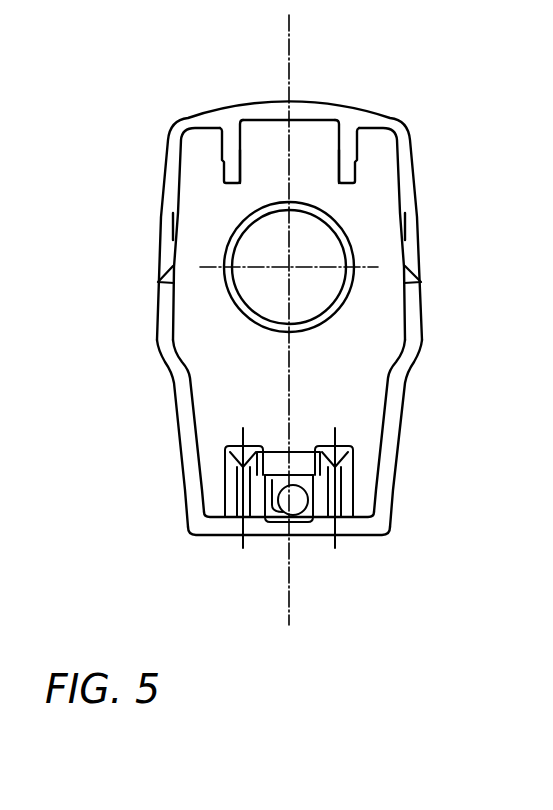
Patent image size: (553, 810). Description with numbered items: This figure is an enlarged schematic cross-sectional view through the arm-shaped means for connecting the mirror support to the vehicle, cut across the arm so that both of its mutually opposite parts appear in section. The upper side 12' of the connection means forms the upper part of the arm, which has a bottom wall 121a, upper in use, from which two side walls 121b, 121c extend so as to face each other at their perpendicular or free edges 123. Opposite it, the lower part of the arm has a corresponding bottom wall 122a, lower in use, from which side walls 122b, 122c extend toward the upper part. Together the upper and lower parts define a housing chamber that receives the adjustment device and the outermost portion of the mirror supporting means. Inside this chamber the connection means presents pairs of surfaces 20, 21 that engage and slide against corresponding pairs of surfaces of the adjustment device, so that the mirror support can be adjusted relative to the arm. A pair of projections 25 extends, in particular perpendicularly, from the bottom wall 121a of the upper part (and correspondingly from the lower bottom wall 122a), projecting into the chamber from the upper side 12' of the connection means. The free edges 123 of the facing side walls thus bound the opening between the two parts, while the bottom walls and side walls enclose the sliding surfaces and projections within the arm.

The upper side of the means for the connection to the vehicle 12' is at (278, 190).
The surface of the means for the connection to the vehicle 20 is at (338, 157).
The surface of the means for the connection to the vehicle 21 is at (250, 147).
The projection 25 is at (221, 198).
The bottom wall 121a is at (360, 110).
The side wall 121b is at (161, 214).
The side wall 121c is at (418, 214).
The bottom wall 122a is at (355, 527).
The side wall 122b is at (183, 410).
The side wall 122c is at (400, 383).
The free edge 123 is at (413, 270).